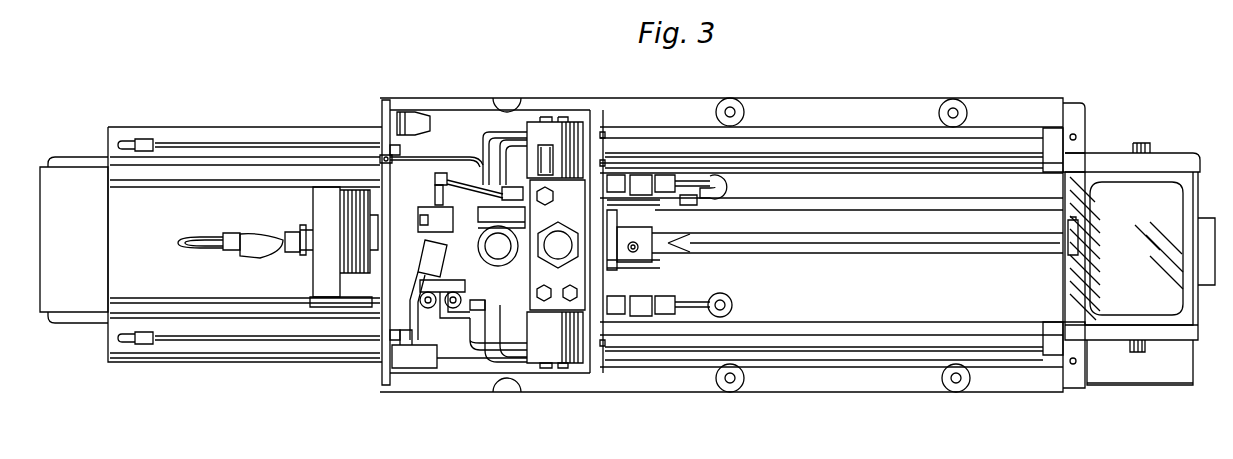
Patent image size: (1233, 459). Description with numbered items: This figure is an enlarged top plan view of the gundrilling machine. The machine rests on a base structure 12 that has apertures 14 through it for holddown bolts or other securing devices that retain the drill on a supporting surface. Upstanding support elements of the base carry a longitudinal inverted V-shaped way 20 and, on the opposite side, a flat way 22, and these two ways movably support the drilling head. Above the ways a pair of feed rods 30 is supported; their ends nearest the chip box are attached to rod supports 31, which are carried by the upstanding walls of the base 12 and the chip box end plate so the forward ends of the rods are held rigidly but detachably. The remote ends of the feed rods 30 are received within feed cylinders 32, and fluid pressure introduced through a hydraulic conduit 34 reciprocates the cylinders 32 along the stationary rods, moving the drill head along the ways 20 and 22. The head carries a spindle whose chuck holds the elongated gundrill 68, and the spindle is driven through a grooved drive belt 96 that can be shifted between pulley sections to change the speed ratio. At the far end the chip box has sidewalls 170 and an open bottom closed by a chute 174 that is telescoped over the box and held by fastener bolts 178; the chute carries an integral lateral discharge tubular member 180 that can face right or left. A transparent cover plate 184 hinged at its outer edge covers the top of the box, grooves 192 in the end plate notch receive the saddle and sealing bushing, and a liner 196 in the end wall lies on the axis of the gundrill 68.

The base structure 12 is at (1000, 382).
The apertures 14 is at (956, 384).
The inverted V-shaped way 20 is at (913, 165).
The flat way 22 is at (837, 361).
The feed rods 30 is at (848, 152).
The rod supports 31 is at (1057, 357).
The feed cylinders 32 is at (275, 138).
The hydraulic conduit 34 is at (203, 147).
The gundrill 68 is at (900, 254).
The drive belt 96 is at (320, 198).
The sidewalls 170 is at (1106, 163).
The chute 174 is at (1172, 378).
The fastener bolts 178 is at (1138, 354).
The discharge tubular member 180 is at (1108, 386).
The transparent cover plate 184 is at (1188, 180).
The grooves 192 is at (1068, 225).
The liner 196 is at (1205, 238).